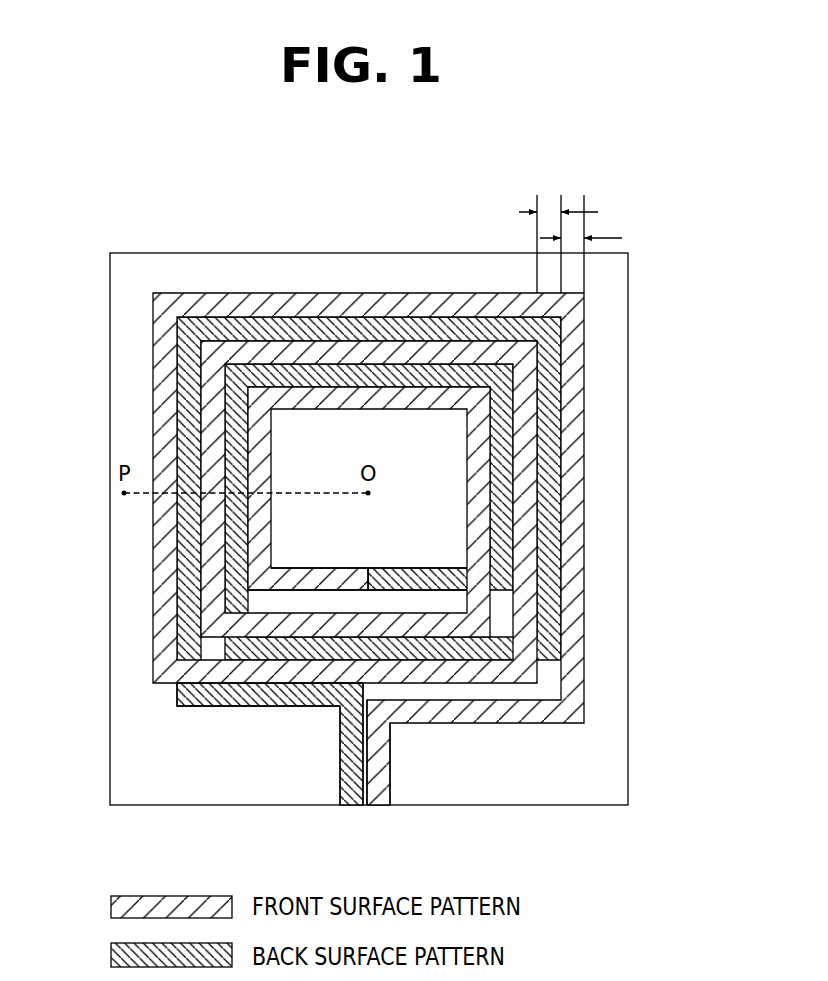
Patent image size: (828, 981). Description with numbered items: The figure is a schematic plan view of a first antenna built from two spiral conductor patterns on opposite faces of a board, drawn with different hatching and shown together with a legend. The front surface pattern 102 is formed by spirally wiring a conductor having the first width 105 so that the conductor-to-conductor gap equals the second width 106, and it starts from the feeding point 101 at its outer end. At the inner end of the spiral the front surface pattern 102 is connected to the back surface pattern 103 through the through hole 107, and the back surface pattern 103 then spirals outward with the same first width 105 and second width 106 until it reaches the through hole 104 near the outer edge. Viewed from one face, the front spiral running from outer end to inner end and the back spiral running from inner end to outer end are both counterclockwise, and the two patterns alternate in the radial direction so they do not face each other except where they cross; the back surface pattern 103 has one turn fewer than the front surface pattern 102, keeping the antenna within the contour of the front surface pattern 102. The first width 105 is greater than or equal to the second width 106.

The feeding point 101 is at (370, 805).
The front surface pattern 102 is at (579, 697).
The back surface pattern 103 is at (213, 707).
The through hole 104 is at (342, 705).
The first width 105 is at (576, 234).
The second width 106 is at (546, 212).
The through hole 107 is at (358, 573).